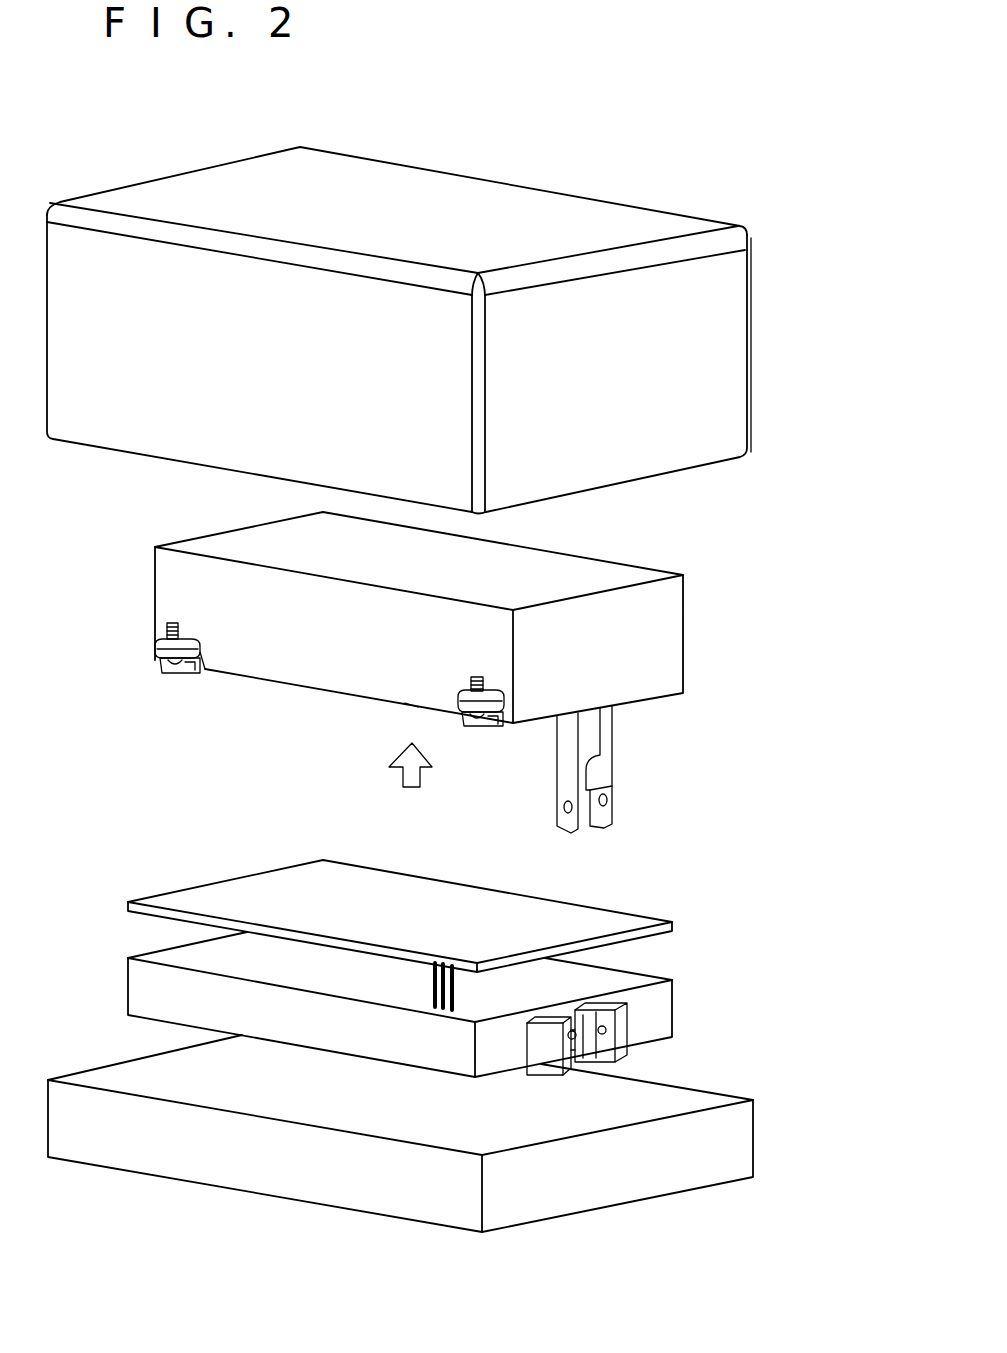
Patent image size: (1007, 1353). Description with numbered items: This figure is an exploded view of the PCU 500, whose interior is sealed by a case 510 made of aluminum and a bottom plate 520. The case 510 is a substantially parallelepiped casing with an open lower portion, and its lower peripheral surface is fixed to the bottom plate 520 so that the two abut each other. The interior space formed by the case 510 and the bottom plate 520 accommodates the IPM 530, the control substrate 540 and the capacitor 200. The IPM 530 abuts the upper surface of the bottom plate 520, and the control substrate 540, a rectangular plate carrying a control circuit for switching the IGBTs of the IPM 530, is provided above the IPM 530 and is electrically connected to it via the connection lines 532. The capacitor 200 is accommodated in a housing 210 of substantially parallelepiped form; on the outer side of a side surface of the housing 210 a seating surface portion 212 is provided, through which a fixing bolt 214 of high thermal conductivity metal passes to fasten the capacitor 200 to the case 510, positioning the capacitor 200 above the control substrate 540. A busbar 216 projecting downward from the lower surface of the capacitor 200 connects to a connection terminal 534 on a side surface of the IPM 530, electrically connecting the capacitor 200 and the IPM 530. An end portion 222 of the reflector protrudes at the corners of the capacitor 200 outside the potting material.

The PCU 500 is at (423, 124).
The case 510 is at (610, 196).
The capacitor 200 is at (713, 583).
The housing 210 is at (683, 640).
The fixing bolt 214 is at (168, 623).
The seating surface portion 212 is at (202, 653).
The end portion 222 is at (187, 676).
The busbar 216 is at (598, 737).
The control substrate 540 is at (625, 918).
The IPM 530 is at (665, 1005).
The connection lines 532 is at (435, 986).
The connection terminal 534 is at (550, 1062).
The bottom plate 520 is at (660, 1196).